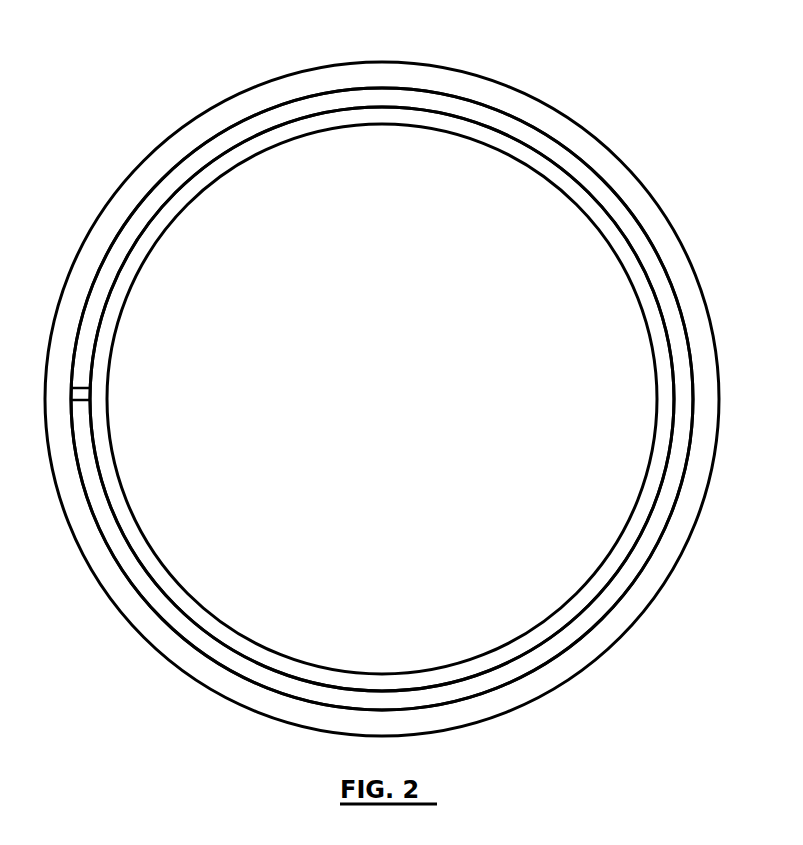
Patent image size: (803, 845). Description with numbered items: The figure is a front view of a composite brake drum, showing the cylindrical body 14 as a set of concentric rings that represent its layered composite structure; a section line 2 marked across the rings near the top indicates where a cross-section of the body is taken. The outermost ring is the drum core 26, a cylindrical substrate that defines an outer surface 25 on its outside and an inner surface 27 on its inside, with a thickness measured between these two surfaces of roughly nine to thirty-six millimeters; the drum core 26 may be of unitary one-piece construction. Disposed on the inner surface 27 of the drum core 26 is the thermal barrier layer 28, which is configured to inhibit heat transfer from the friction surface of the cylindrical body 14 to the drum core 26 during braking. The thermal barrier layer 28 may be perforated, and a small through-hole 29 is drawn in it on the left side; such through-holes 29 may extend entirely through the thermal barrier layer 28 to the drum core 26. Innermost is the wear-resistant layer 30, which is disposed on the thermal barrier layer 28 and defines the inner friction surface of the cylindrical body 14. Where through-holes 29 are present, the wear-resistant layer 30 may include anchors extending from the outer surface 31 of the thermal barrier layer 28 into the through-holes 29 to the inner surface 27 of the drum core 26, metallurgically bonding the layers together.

The cylindrical body 14 is at (676, 59).
The outer surface 25 is at (90, 228).
The drum core 26 is at (116, 199).
The inner surface 27 is at (153, 187).
The thermal barrier layer 28 is at (88, 348).
The through-holes 29 is at (85, 392).
The wear-resistant layer 30 is at (144, 546).
The outer surface of the thermal barrier layer 31 is at (132, 515).
The section line 2-2' 2 is at (375, 147).